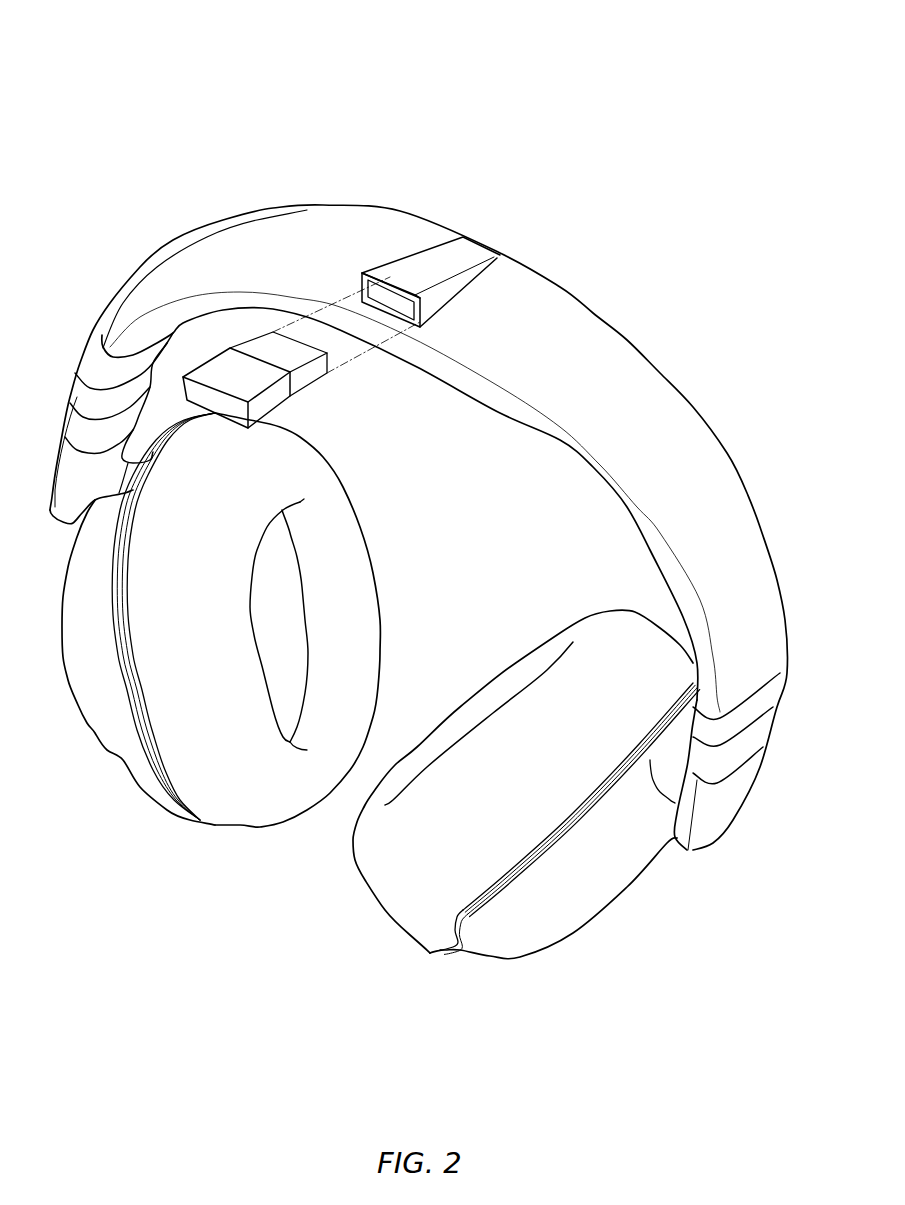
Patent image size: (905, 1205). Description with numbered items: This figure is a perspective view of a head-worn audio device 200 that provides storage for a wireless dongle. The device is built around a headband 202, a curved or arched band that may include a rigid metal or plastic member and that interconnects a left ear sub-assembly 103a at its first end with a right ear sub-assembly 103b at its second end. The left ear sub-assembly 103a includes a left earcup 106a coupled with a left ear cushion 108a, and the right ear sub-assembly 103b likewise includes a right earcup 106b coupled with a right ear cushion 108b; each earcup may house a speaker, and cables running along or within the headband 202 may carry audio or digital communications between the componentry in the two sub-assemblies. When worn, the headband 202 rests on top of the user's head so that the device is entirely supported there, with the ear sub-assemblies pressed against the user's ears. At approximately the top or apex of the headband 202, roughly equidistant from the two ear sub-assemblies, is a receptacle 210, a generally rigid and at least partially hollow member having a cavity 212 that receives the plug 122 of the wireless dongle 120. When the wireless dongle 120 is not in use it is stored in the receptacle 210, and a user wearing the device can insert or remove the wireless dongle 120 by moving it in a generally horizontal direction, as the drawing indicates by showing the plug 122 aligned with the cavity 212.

The head-worn audio device 200 is at (118, 181).
The headband 202 is at (318, 206).
The receptacle 210 is at (396, 261).
The cavity 212 is at (422, 317).
The wireless dongle 120 is at (300, 397).
The plug 122 is at (272, 335).
The left ear sub-assembly 103a is at (171, 852).
The right ear sub-assembly 103b is at (400, 966).
The left earcup 106a is at (93, 732).
The right earcup 106b is at (557, 938).
The left ear cushion 108a is at (281, 620).
The right ear cushion 108b is at (523, 781).